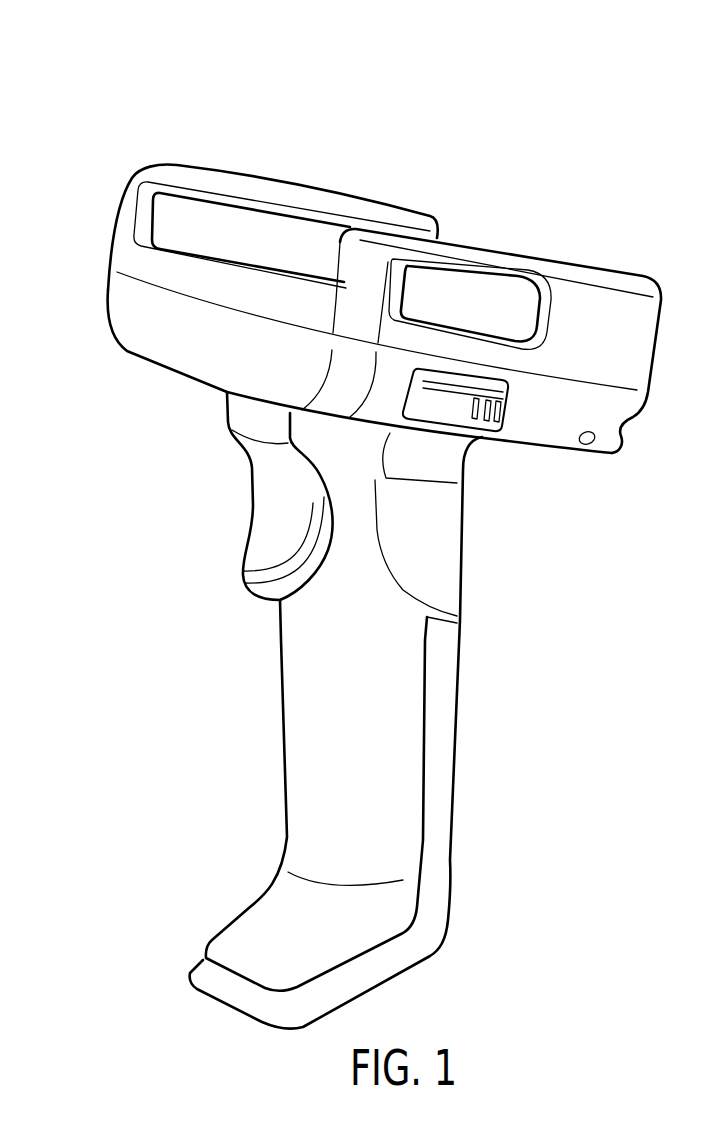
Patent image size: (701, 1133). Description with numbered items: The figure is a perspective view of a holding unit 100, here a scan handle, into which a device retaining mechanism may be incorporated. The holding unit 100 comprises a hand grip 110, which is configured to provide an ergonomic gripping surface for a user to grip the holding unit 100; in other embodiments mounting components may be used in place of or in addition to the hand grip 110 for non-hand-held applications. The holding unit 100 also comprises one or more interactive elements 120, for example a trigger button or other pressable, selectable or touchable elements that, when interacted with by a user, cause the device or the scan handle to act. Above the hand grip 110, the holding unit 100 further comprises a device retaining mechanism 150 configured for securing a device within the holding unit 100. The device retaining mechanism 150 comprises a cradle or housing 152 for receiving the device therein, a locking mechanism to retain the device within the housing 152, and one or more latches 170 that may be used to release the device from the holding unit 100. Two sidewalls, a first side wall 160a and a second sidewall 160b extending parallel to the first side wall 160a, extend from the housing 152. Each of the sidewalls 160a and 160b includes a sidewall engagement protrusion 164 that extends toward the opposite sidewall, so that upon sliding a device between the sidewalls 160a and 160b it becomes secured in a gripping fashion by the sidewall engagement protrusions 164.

The holding unit 100 is at (547, 90).
The hand grip 110 is at (413, 777).
The interactive elements 120 is at (265, 525).
The device retaining mechanism 150 is at (525, 209).
The housing 152 is at (125, 310).
The first side wall 160a is at (615, 303).
The second sidewall 160b is at (370, 222).
The sidewall engagement protrusion 164 is at (209, 177).
The latches 170 is at (458, 413).